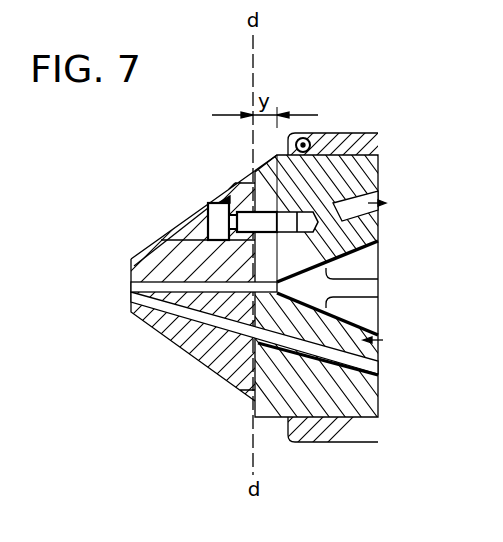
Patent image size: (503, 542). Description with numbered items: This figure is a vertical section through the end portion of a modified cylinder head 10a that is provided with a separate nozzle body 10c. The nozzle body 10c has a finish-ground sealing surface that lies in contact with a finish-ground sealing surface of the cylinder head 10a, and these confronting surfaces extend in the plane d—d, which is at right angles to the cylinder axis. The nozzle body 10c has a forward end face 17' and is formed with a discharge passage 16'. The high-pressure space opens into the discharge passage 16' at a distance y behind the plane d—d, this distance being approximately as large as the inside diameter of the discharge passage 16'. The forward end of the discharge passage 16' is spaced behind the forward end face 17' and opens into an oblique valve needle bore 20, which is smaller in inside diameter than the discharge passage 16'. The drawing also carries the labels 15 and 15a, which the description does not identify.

The cylinder head 10a is at (251, 271).
The nozzle body 10c is at (207, 350).
The nozzle tip member 15 is at (153, 328).
The passage 15a is at (345, 366).
The discharge passage 16' is at (251, 271).
The forward end face 17' is at (154, 225).
The oblique valve needle bore 20 is at (130, 288).